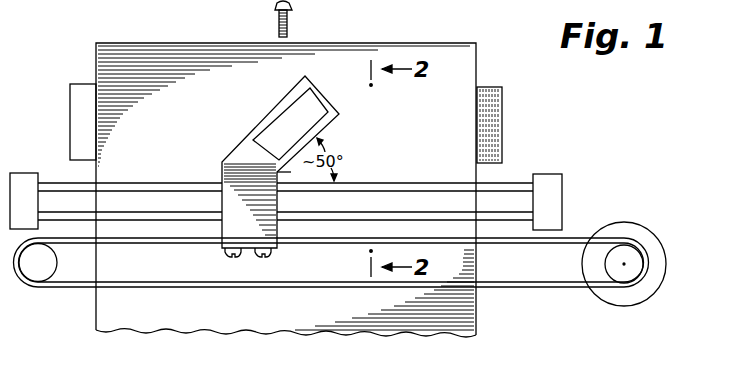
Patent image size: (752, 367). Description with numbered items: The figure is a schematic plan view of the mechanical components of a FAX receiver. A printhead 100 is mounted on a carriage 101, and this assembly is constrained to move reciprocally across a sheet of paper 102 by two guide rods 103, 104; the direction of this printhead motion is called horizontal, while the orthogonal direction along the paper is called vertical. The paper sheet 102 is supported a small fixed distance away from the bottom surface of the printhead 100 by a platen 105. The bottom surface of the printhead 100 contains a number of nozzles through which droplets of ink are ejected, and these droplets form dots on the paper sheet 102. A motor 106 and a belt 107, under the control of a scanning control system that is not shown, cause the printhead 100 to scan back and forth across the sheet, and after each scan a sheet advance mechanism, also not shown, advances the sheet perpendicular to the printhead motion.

The printhead 100 is at (302, 136).
The carriage 101 is at (272, 109).
The sheet of paper 102 is at (110, 42).
The guide rod 103 is at (352, 183).
The guide rod 104 is at (397, 212).
The platen 105 is at (503, 143).
The motor 106 is at (660, 253).
The belt 107 is at (573, 238).